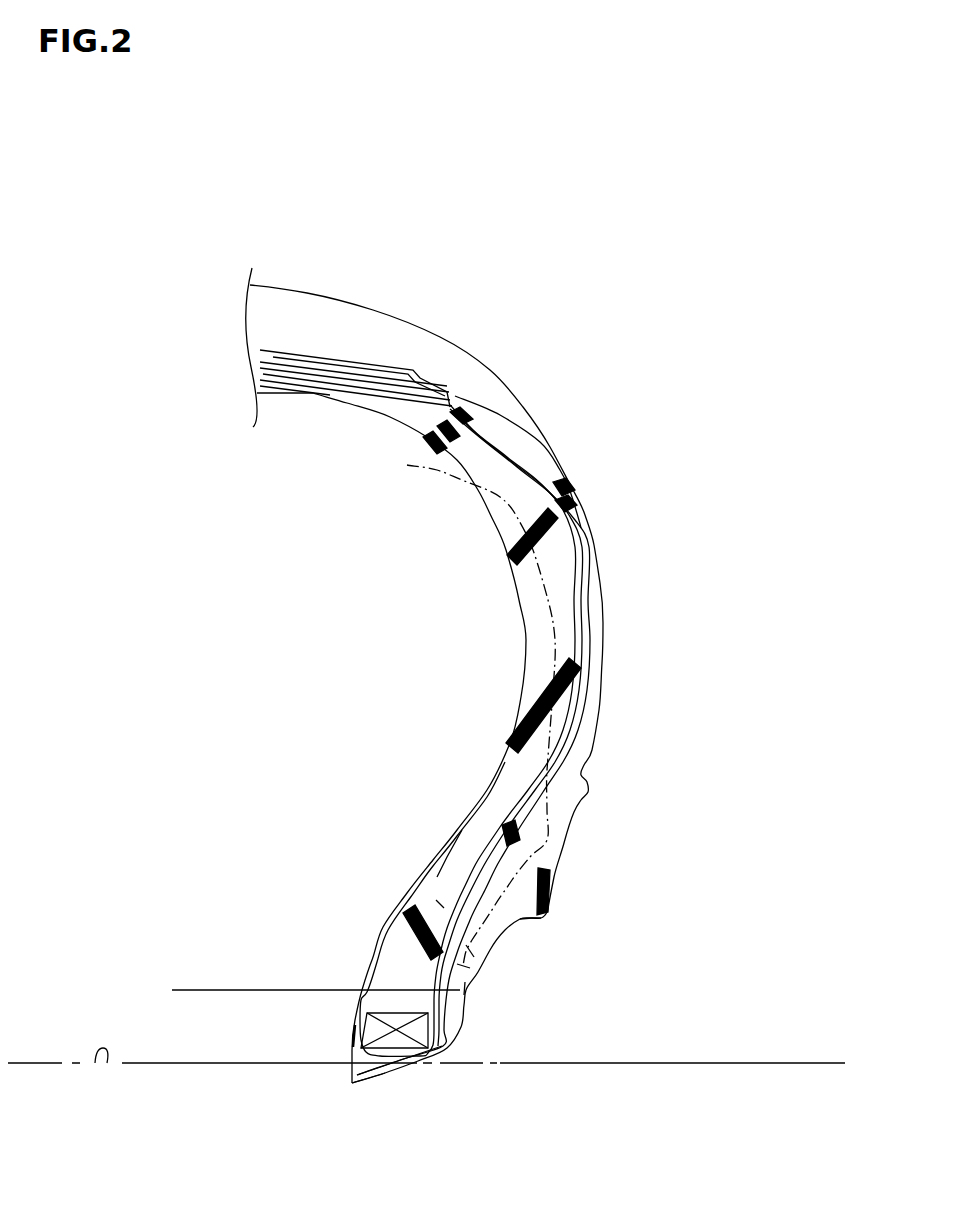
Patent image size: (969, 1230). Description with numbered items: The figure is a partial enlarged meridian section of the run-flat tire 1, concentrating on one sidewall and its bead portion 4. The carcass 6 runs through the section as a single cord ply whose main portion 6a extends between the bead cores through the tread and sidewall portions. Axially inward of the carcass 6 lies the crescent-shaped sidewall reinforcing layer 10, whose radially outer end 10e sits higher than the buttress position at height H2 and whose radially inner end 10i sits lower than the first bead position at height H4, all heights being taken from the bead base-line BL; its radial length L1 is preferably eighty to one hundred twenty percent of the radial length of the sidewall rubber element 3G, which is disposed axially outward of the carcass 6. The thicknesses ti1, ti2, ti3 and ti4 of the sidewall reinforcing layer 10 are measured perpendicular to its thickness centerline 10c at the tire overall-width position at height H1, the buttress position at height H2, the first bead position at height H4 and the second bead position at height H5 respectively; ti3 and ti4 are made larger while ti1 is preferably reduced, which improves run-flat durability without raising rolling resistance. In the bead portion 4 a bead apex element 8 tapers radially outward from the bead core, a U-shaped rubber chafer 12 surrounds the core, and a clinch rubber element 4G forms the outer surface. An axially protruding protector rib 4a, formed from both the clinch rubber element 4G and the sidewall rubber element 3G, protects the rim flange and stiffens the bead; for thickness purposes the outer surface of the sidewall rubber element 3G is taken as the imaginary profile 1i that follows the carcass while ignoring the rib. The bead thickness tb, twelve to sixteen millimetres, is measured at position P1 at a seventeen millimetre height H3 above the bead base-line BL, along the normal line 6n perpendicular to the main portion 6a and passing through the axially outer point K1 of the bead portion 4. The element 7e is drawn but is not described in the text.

The run-flat tire 1 is at (454, 216).
The imaginary profile 1i is at (537, 860).
The sidewall rubber element 3G is at (572, 517).
The bead portion 4 is at (443, 1080).
The protector rib 4a is at (520, 917).
The clinch rubber element 4G is at (463, 986).
The carcass 6 is at (567, 544).
The main portion 6a is at (440, 907).
The normal line 6n is at (407, 925).
The belt edge 7e is at (450, 407).
The bead apex element 8 is at (447, 885).
The sidewall reinforcing layer 10 is at (530, 690).
The thickness centerline 10c is at (407, 465).
The radially outer end 10e is at (330, 397).
The radially inner end 10i is at (470, 953).
The rubber chafer 12 is at (385, 1085).
The bead base-line BL is at (96, 1063).
The position P1 is at (205, 990).
The axially outer point K1 is at (470, 1012).
The radial length L1 is at (413, 884).
The height H1 is at (783, 626).
The height H2 is at (520, 500).
The height H3 is at (172, 990).
The height H4 is at (470, 831).
The height H5 is at (497, 796).
The thickness ti1 is at (783, 626).
The thickness ti2 is at (563, 470).
The thickness ti3 is at (483, 820).
The thickness ti4 is at (500, 785).
The thickness tb is at (458, 988).